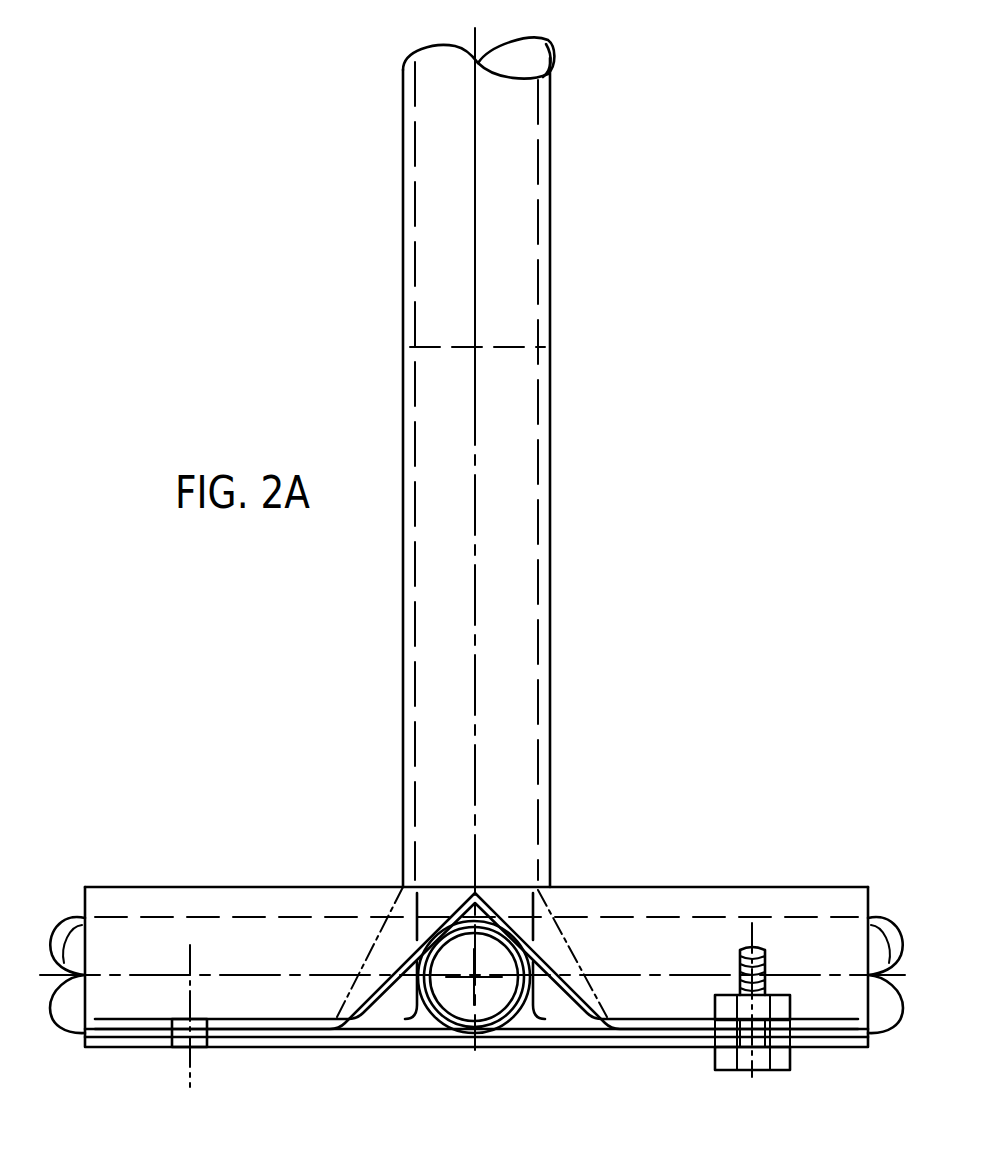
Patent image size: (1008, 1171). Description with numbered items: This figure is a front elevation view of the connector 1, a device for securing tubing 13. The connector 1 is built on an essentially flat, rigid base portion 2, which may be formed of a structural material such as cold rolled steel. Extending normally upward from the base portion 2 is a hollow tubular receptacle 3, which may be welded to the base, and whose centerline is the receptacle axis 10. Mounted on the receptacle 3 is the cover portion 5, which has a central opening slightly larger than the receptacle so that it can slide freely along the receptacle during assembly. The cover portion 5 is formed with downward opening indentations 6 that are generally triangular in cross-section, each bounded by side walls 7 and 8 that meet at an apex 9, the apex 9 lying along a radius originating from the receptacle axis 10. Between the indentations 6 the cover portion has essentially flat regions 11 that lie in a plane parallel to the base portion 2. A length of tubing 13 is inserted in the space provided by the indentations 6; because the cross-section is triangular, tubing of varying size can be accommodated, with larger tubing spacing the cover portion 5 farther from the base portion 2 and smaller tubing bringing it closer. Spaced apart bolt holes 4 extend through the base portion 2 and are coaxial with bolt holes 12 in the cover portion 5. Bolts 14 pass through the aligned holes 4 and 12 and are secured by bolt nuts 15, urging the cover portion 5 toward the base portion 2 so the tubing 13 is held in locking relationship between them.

The connector 1 is at (350, 772).
The base portion 2 is at (588, 1047).
The receptacle 3 is at (548, 489).
The bolt holes 4 is at (773, 1047).
The cover portion 5 is at (680, 887).
The indentations 6 is at (482, 913).
The side wall 7 is at (528, 937).
The side wall 8 is at (433, 927).
The apex 9 is at (477, 891).
The receptacle axis 10 is at (477, 148).
The cover portion regions 11 is at (262, 1033).
The bolt holes 12 is at (737, 1030).
The tubing 13 is at (550, 621).
The bolts 14 is at (747, 1065).
The bolt nuts 15 is at (715, 1007).